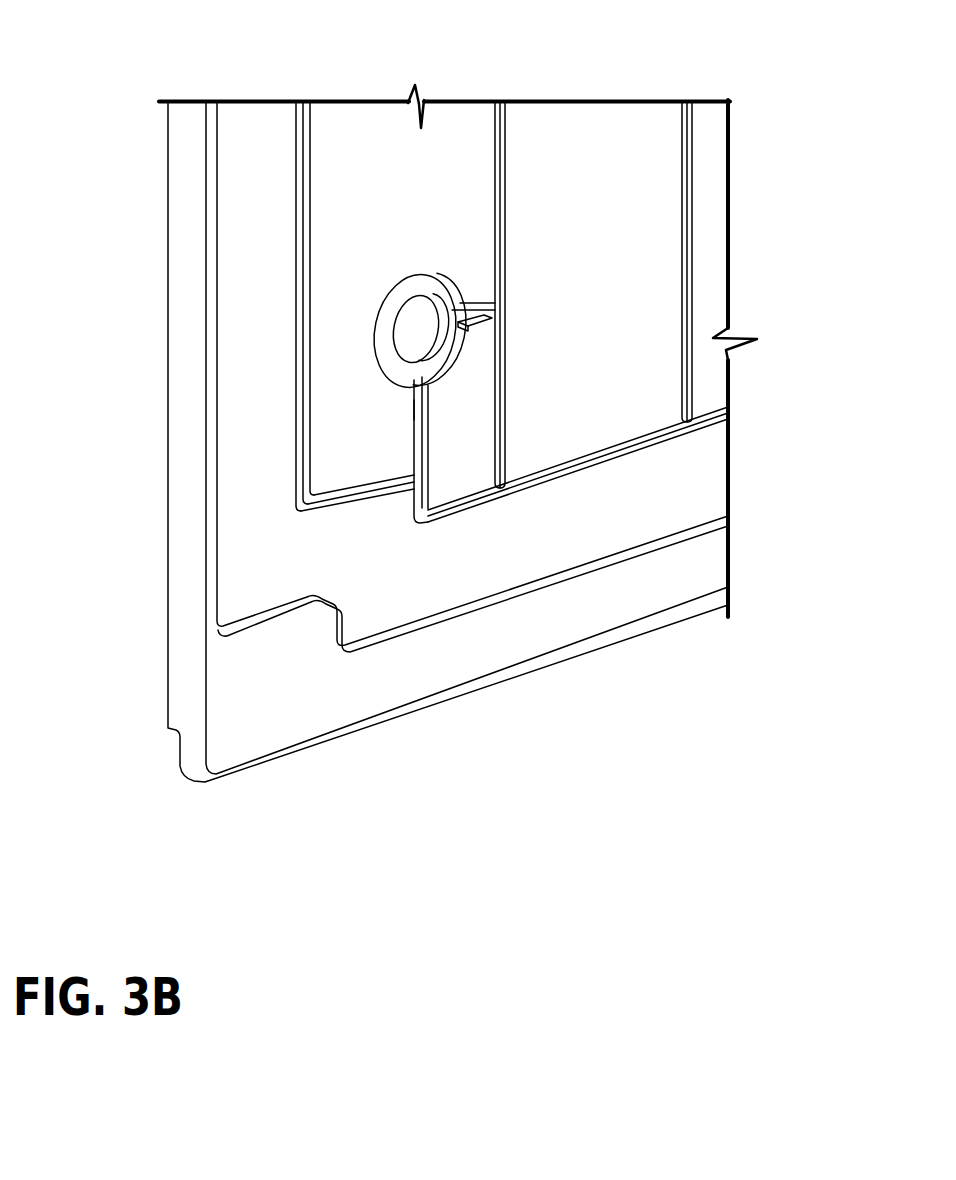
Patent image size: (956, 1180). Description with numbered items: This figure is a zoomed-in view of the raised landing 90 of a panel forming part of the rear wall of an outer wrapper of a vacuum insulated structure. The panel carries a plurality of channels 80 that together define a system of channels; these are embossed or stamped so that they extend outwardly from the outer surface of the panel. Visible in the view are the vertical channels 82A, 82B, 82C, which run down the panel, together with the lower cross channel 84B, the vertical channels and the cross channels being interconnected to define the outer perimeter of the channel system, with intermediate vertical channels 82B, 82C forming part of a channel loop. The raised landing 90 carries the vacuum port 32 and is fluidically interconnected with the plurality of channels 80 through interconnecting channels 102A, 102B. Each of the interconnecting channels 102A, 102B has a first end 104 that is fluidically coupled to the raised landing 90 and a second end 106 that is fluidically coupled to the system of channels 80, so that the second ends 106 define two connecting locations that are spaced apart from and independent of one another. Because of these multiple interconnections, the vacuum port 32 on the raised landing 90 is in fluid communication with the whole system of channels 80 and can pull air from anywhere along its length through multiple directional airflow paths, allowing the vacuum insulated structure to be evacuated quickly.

The plurality of channels 80 is at (674, 453).
The vertical channel 82A is at (305, 178).
The vertical channel 82B is at (503, 139).
The vertical channel 82C is at (683, 125).
The lower cross channel 84B is at (612, 458).
The raised landing 90 is at (394, 297).
The vacuum port 32 is at (413, 338).
The first end 104 is at (420, 403).
The second end 106 is at (490, 307).
The interconnecting channel 102A is at (417, 403).
The interconnecting channel 102B is at (477, 322).